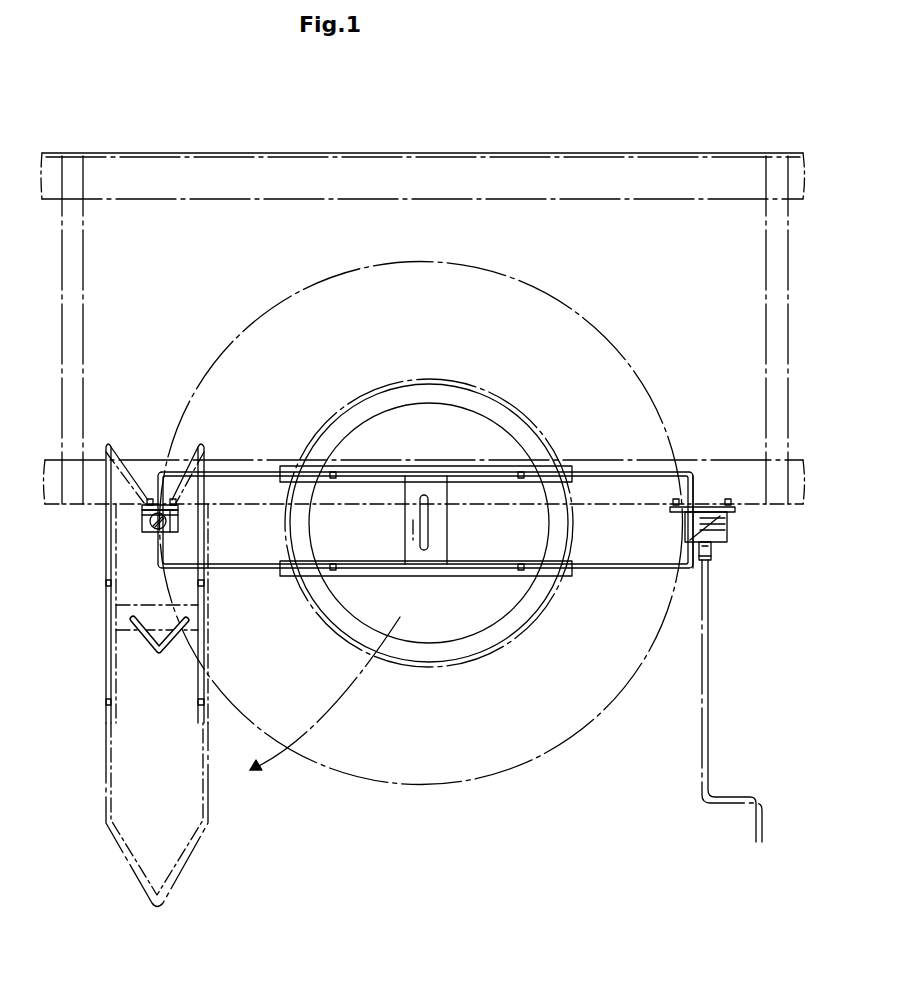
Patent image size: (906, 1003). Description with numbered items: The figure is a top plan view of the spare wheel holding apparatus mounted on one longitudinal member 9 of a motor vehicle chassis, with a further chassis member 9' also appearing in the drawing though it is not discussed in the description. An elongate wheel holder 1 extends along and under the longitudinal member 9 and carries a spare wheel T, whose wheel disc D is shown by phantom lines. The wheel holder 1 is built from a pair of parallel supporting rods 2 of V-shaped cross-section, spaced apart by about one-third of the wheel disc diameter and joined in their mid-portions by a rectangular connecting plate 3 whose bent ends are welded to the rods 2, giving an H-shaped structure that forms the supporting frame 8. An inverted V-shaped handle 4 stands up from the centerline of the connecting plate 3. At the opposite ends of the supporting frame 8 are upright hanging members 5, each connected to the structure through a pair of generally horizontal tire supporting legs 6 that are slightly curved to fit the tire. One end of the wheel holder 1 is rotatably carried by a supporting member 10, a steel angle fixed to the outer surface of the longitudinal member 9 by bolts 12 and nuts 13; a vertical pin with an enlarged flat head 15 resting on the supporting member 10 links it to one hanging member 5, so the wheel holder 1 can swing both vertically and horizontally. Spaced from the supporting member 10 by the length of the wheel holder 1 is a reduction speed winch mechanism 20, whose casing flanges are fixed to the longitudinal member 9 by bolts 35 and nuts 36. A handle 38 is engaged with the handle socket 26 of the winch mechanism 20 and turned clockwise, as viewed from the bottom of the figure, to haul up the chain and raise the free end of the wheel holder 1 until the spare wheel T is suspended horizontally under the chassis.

The wheel holder 1 is at (508, 448).
The supporting rods 2 is at (498, 562).
The connecting plate 3 is at (417, 556).
The handle 4 is at (432, 553).
The hanging members 5 is at (150, 497).
The tire supporting legs 6 is at (243, 566).
The supporting frame 8 is at (553, 470).
The longitudinal member 9 is at (424, 330).
The frame cross member 9' is at (423, 205).
The supporting member 10 is at (142, 514).
The bolts 12 is at (150, 499).
The nuts 13 is at (151, 529).
The enlarged flat head 15 is at (152, 532).
The reduction speed winch mechanism 20 is at (712, 550).
The handle socket 26 is at (710, 560).
The bolts 35 is at (723, 503).
The nuts 36 is at (733, 517).
The handle 38 is at (708, 735).
The wheel disc D is at (461, 402).
The spare wheel T is at (545, 292).